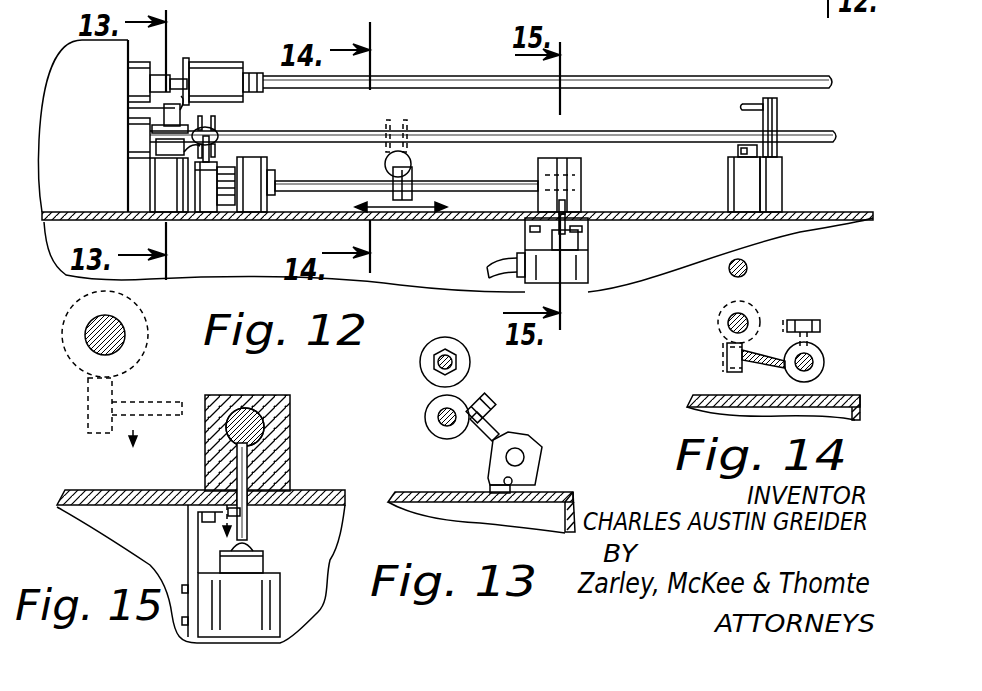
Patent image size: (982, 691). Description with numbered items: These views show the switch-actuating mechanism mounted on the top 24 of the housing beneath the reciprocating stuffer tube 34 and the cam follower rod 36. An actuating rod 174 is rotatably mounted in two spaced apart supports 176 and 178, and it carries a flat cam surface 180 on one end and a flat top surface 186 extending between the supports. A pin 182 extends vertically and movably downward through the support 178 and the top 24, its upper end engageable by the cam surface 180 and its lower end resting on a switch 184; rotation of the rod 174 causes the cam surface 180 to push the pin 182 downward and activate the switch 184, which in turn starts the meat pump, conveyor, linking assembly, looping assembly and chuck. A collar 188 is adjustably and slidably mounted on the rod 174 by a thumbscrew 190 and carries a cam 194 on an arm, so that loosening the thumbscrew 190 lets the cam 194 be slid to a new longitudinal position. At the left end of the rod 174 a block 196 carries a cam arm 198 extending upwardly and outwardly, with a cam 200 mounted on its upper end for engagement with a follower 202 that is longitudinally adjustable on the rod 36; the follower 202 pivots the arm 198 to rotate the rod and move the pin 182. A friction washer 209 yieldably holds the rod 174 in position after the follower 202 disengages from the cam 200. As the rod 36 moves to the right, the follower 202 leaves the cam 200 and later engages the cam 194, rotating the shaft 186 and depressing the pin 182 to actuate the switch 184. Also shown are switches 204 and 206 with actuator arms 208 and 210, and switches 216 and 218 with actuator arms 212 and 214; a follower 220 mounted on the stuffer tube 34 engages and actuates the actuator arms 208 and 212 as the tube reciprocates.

In FIG. 12, the top 24 is at (813, 212).
In FIG. 15, the top 24 is at (140, 490).
In FIG. 13, the top 24 is at (577, 500).
In FIG. 14, the top 24 is at (773, 407).
In FIG. 12, the stuffer tube 34 is at (423, 77).
In FIG. 13, the stuffer tube 34 is at (441, 356).
In FIG. 14, the stuffer tube 34 is at (747, 266).
In FIG. 12, the cam follower rod 36 is at (560, 132).
In FIG. 15, the cam follower rod 36 is at (120, 330).
In FIG. 13, the cam follower rod 36 is at (437, 415).
In FIG. 14, the cam follower rod 36 is at (743, 317).
In FIG. 12, the actuating rod 174 is at (317, 182).
In FIG. 15, the actuating rod 174 is at (248, 412).
In FIG. 13, the actuating rod 174 is at (523, 457).
In FIG. 14, the actuating rod 174 is at (798, 375).
In FIG. 12, the support 176 is at (253, 193).
In FIG. 12, the support 178 is at (582, 168).
In FIG. 15, the support 178 is at (290, 398).
In FIG. 12, the flat cam surface 180 is at (580, 200).
In FIG. 15, the flat cam surface 180 is at (255, 443).
In FIG. 12, the pin 182 is at (560, 230).
In FIG. 15, the pin 182 is at (248, 517).
In FIG. 12, the switch 184 is at (588, 233).
In FIG. 15, the switch 184 is at (253, 545).
In FIG. 12, the flat top surface 186 is at (500, 177).
In FIG. 14, the flat top surface 186 is at (817, 350).
In FIG. 12, the collar 188 is at (403, 200).
In FIG. 14, the collar 188 is at (823, 368).
In FIG. 14, the thumbscrew 190 is at (820, 325).
In FIG. 12, the cam 194 is at (390, 163).
In FIG. 15, the cam 194 is at (88, 410).
In FIG. 14, the cam 194 is at (727, 355).
In FIG. 12, the block 196 is at (207, 200).
In FIG. 13, the block 196 is at (532, 440).
In FIG. 13, the cam arm 198 is at (500, 427).
In FIG. 12, the cam 200 is at (222, 136).
In FIG. 13, the cam 200 is at (495, 400).
In FIG. 12, the follower 202 is at (217, 122).
In FIG. 15, the follower 202 is at (145, 352).
In FIG. 13, the follower 202 is at (447, 437).
In FIG. 14, the follower 202 is at (718, 322).
In FIG. 12, the switch 204 is at (163, 192).
In FIG. 12, the switch 206 is at (165, 129).
In FIG. 12, the actuator arm 208 is at (195, 152).
In FIG. 12, the friction washer 209 is at (237, 208).
In FIG. 12, the actuator arm 210 is at (178, 105).
In FIG. 12, the actuator arm 212 is at (730, 153).
In FIG. 12, the actuator arm 214 is at (745, 107).
In FIG. 12, the switch 216 is at (760, 165).
In FIG. 12, the switch 218 is at (777, 115).
In FIG. 12, the follower 220 is at (233, 62).
In FIG. 13, the follower 220 is at (468, 368).